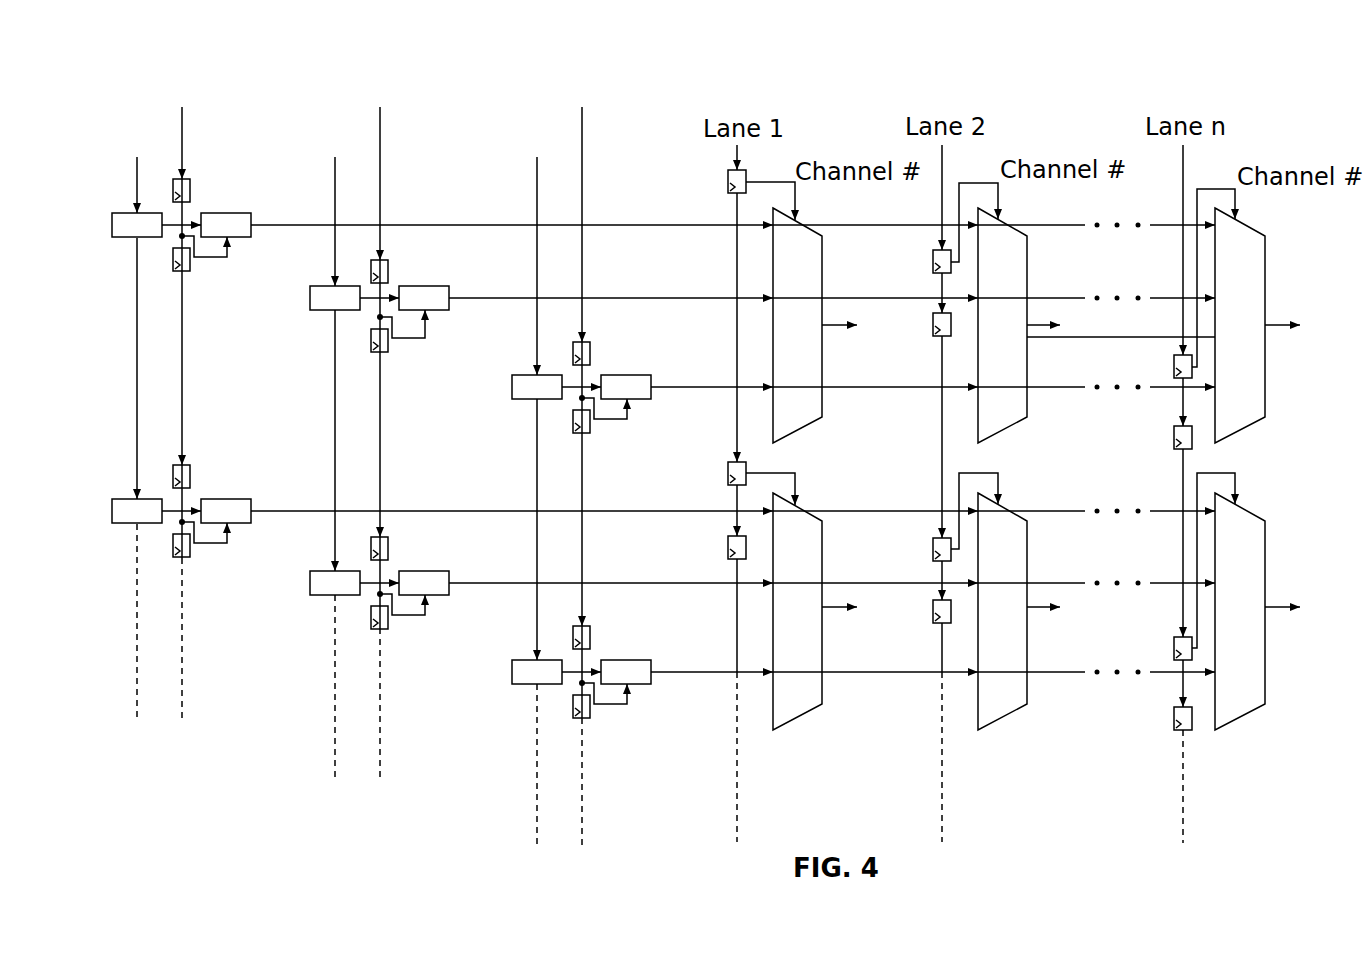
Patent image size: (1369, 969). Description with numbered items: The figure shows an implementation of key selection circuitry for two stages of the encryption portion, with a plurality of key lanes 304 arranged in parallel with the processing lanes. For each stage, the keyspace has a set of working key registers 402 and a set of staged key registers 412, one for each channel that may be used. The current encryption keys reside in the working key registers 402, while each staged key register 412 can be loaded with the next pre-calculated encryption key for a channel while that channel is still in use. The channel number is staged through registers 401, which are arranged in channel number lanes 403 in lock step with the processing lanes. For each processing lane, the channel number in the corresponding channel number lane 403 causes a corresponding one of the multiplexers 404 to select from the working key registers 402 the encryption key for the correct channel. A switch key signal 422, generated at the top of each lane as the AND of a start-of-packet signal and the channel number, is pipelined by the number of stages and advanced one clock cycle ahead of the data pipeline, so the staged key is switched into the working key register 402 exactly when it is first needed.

The key lane 304 is at (112, 53).
The channel number lane 403 is at (112, 108).
The staged key register 412 is at (112, 155).
The working key register 402 is at (202, 155).
The switch key signal 422 is at (185, 158).
The register 401 is at (191, 192).
The multiplexer 404 is at (823, 286).